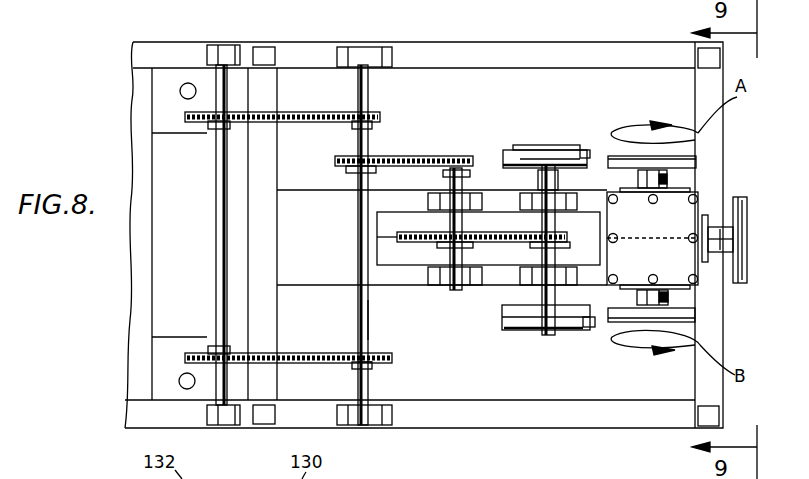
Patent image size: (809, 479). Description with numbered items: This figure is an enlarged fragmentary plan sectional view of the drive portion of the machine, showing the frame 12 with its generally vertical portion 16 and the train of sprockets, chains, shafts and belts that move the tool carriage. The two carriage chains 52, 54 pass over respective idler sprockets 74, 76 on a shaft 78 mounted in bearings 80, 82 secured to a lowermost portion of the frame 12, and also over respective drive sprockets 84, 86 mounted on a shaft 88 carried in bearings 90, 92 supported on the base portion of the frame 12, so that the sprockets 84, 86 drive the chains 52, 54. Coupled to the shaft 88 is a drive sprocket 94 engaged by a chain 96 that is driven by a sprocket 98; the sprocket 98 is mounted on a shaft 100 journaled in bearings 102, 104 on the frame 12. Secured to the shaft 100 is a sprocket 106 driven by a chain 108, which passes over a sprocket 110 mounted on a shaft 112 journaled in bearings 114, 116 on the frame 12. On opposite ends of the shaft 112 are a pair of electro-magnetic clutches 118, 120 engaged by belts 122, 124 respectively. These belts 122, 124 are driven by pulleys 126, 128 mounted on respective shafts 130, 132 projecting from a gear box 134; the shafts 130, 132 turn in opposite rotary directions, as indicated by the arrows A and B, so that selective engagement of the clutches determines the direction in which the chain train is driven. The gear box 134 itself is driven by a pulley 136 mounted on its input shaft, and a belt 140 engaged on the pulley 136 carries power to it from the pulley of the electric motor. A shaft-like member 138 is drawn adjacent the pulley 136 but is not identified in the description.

The frame 12 is at (488, 414).
The vertical portion 16 is at (272, 55).
The chain 52 is at (326, 124).
The chain 54 is at (313, 352).
The idler sprocket 74 is at (220, 45).
The idler sprocket 76 is at (193, 372).
The shaft 78 is at (215, 320).
The bearing 80 is at (229, 52).
The bearing 82 is at (222, 427).
The drive sprocket 84 is at (363, 118).
The drive sprocket 86 is at (375, 363).
The shaft 88 is at (369, 318).
The bearing 90 is at (364, 50).
The bearing 92 is at (363, 428).
The drive sprocket 94 is at (370, 160).
The chain 96 is at (414, 160).
The sprocket 98 is at (457, 162).
The shaft 100 is at (437, 246).
The bearing 102 is at (430, 201).
The bearing 104 is at (457, 292).
The sprocket 106 is at (378, 239).
The chain 108 is at (504, 246).
The sprocket 110 is at (583, 234).
The shaft 112 is at (550, 150).
The bearing 114 is at (560, 203).
The bearing 116 is at (580, 275).
The electro-magnetic clutch 118 is at (531, 151).
The electro-magnetic clutch 120 is at (532, 330).
The belt 122 is at (589, 152).
The belt 124 is at (598, 320).
The pulley 126 is at (700, 161).
The pulley 128 is at (695, 320).
The shaft 130 is at (668, 178).
The shaft 132 is at (668, 298).
The gear box 134 is at (688, 214).
The pulley 136 is at (747, 240).
The shaft 138 is at (725, 258).
The belt 140 is at (743, 252).